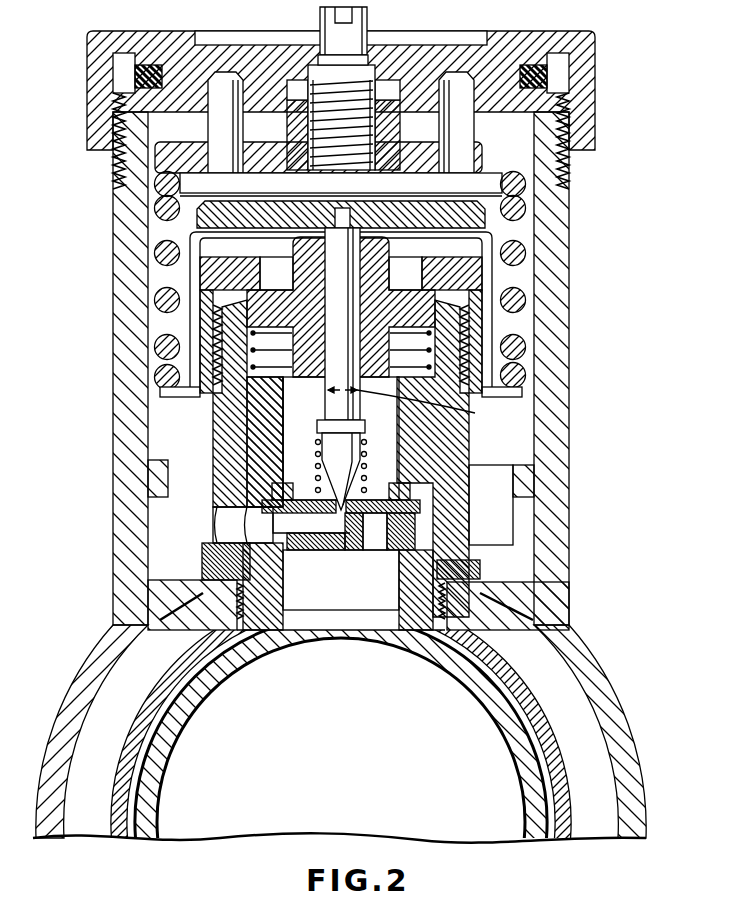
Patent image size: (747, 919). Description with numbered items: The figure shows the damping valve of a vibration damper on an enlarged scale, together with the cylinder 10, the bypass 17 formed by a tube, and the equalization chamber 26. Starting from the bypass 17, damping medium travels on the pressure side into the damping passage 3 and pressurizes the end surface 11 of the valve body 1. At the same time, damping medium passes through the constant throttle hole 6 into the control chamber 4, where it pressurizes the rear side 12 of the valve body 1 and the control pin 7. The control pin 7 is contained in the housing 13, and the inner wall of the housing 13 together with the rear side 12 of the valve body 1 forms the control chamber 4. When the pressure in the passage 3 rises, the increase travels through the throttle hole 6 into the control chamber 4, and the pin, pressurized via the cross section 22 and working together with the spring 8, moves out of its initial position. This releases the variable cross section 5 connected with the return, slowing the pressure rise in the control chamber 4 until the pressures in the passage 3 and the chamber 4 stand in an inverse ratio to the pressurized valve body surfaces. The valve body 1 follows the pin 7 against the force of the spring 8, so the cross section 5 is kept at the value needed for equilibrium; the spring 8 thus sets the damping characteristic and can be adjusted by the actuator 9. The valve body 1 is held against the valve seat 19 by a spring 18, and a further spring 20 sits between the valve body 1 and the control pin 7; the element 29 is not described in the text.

The valve body 1 is at (273, 493).
The damping passage 3 is at (300, 573).
The control chamber 4 is at (300, 457).
The variable cross section 5 is at (343, 537).
The constant throttle hole 6 is at (380, 502).
The control pin 7 is at (345, 290).
The spring 8 is at (527, 200).
The actuator 9 is at (385, 121).
The cylinder 10 is at (190, 703).
The end surface 11 is at (352, 550).
The rear side 12 is at (467, 333).
The housing 13 is at (415, 312).
The bypass 17 is at (533, 757).
The spring 18 is at (243, 380).
The valve seat 19 is at (437, 562).
The spring 20 is at (370, 453).
The cross section 22 is at (417, 408).
The equalization chamber 26 is at (567, 722).
The cylinder 29 is at (500, 280).